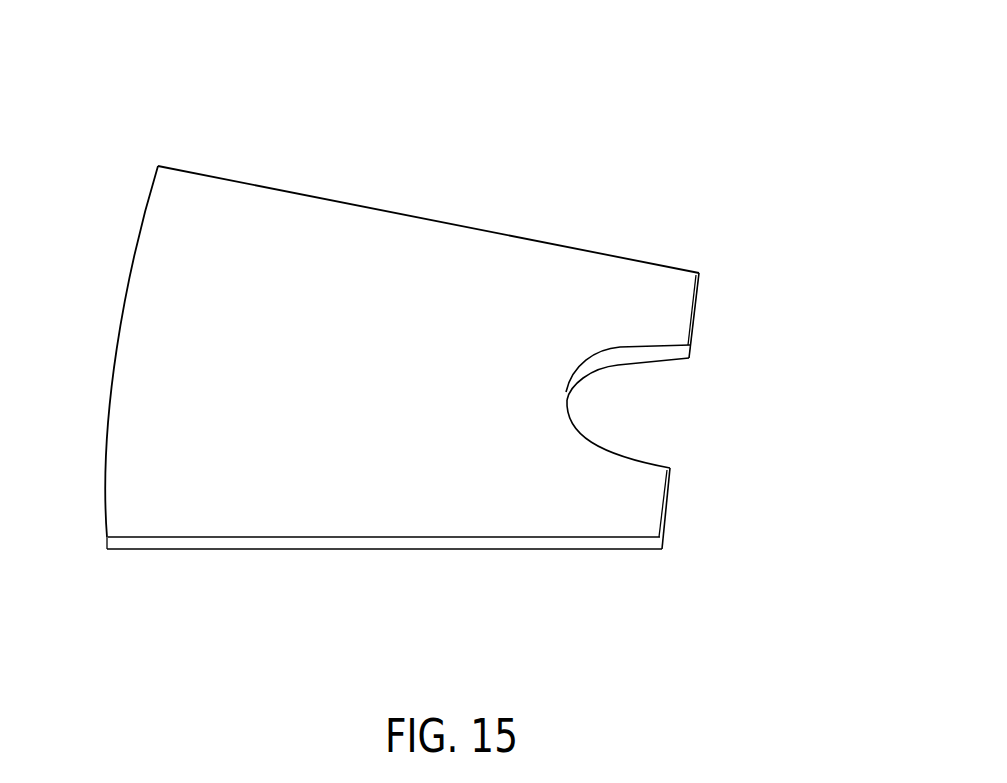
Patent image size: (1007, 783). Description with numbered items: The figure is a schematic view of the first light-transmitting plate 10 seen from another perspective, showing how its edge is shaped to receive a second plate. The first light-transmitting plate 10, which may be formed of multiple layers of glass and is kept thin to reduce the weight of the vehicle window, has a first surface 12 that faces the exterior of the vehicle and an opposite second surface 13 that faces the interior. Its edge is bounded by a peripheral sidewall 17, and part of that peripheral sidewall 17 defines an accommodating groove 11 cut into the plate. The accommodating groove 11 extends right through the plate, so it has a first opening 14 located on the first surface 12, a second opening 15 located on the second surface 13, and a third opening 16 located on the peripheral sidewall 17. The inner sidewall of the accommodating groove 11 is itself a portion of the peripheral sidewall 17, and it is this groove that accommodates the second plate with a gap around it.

The first light-transmitting plate 10 is at (443, 205).
The accommodating groove 11 is at (622, 413).
The first surface 12 is at (283, 420).
The second surface 13 is at (257, 550).
The first opening 14 is at (650, 345).
The second opening 15 is at (616, 363).
The third opening 16 is at (692, 345).
The peripheral sidewall 17 is at (316, 542).